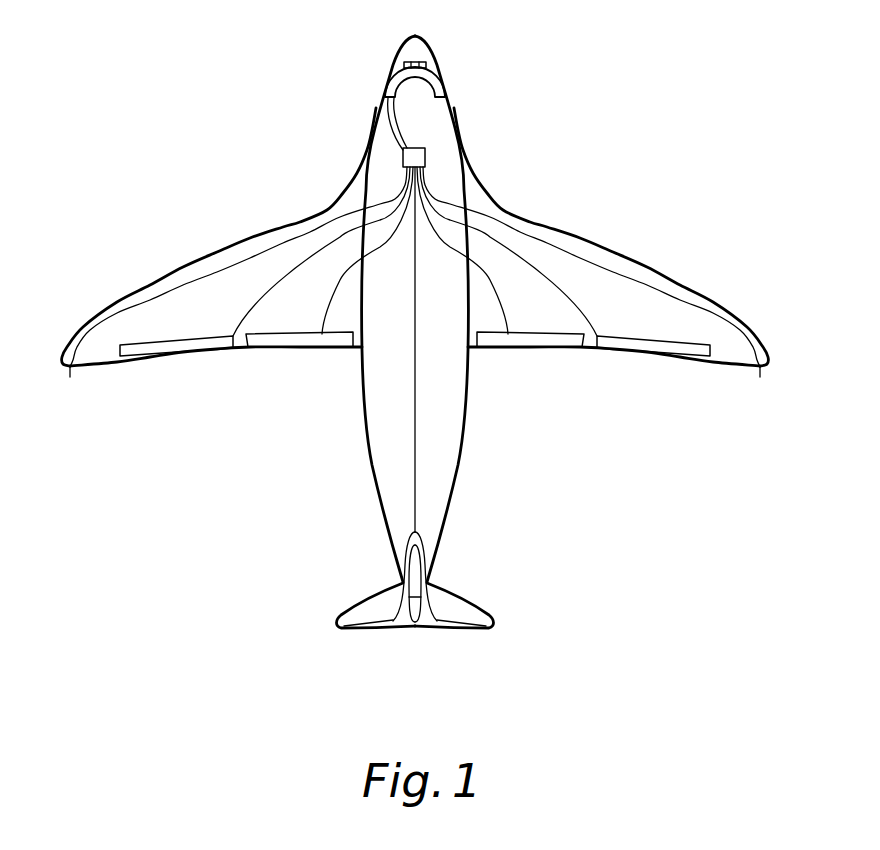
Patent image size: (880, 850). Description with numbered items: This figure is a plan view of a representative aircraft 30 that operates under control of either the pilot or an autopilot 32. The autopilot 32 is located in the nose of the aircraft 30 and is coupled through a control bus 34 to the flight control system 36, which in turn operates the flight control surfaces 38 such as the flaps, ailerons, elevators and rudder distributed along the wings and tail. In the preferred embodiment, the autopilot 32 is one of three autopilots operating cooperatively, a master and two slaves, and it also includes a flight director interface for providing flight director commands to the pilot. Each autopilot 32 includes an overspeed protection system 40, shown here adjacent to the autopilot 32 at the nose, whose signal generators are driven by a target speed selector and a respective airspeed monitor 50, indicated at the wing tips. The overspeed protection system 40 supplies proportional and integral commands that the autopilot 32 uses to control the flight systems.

The aircraft 30 is at (268, 104).
The autopilot 32 is at (404, 63).
The control bus 34 is at (407, 170).
The flight control system 36 is at (427, 160).
The flight control surfaces 38 is at (168, 350).
The overspeed protection system 40 is at (417, 62).
The airspeed monitor 50 is at (68, 372).